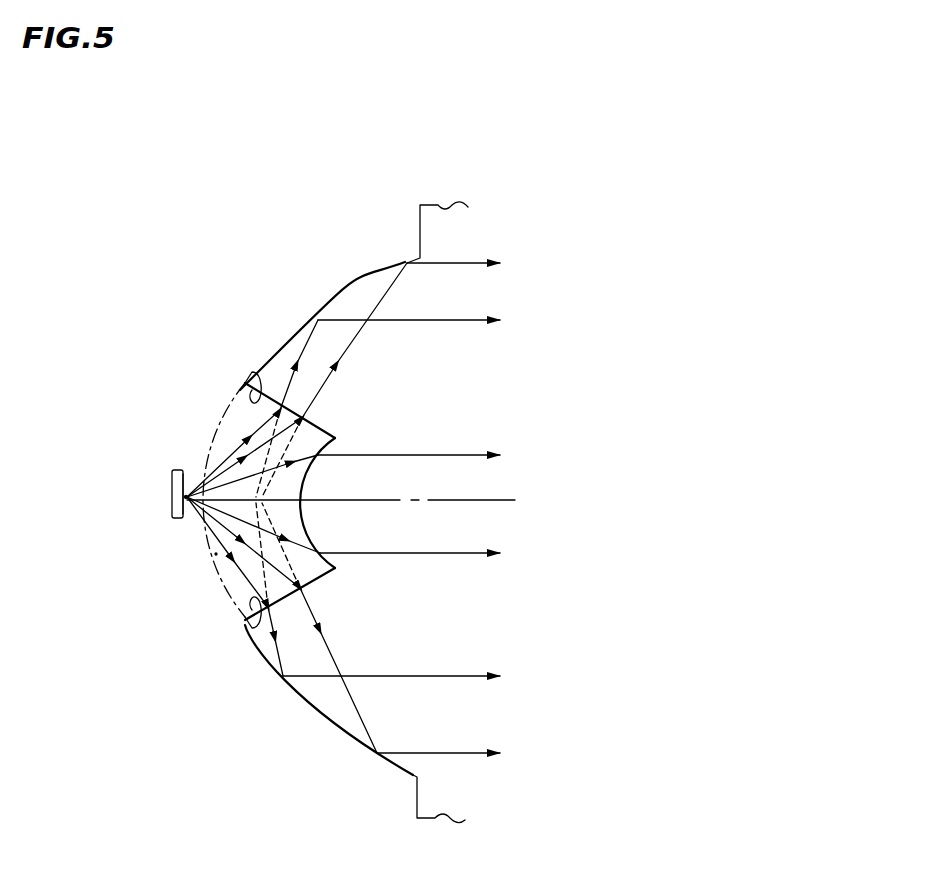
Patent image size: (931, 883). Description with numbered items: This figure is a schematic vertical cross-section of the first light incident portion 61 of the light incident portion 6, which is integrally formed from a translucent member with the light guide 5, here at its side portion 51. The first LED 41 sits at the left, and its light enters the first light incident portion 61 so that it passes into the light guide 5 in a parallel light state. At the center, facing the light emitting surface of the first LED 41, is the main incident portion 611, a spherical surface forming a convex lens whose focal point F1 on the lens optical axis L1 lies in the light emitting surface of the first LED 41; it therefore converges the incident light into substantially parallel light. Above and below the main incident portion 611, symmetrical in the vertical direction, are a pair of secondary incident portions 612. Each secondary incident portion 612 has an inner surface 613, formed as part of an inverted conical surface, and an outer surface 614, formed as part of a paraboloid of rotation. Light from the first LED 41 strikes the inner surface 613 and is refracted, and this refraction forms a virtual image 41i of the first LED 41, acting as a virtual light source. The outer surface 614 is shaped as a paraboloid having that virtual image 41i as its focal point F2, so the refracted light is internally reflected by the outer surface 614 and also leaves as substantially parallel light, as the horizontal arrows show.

The light guide 5 is at (467, 484).
The side portion 51 is at (453, 222).
The light incident portion 6 is at (243, 216).
The first light incident portion 61 is at (353, 257).
The main incident portion 611 is at (337, 570).
The secondary incident portion 612 is at (267, 333).
The inner surface 613 is at (257, 377).
The outer surface 614 is at (340, 300).
The first LED 41 is at (171, 481).
The virtual image 41i is at (240, 488).
The focal point F1 is at (184, 506).
The focal point F2 is at (216, 554).
The lens optical axis L1 is at (381, 507).